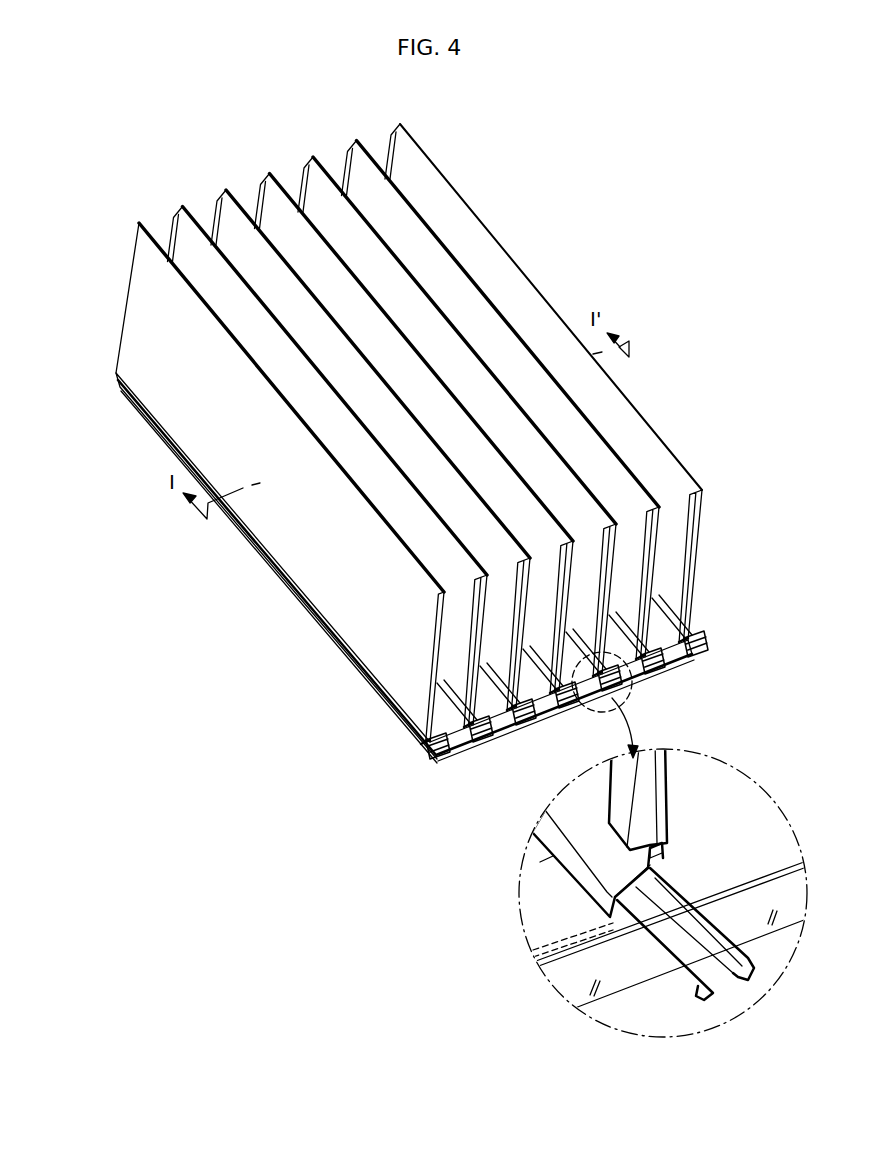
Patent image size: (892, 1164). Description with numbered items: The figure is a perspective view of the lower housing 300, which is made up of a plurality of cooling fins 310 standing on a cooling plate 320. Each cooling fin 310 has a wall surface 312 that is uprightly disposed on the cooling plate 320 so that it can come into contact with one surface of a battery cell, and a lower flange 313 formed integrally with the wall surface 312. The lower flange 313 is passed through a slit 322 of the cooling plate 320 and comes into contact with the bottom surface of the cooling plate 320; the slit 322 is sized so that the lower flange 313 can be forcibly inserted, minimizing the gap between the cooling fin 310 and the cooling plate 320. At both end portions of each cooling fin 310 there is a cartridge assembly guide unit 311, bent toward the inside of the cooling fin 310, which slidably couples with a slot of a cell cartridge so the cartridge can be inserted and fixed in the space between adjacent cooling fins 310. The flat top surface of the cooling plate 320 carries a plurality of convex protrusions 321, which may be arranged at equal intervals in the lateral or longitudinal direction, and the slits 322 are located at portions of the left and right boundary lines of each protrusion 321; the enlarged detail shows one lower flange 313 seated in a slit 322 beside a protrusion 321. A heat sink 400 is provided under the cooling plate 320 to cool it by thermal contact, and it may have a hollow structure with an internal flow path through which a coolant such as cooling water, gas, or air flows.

The lower housing 300 is at (179, 124).
The cooling fin 310 is at (115, 299).
The cartridge assembly guide unit 311 is at (665, 543).
The wall surface 312 is at (193, 242).
The lower flange 313 is at (440, 720).
The cooling plate 320 is at (360, 678).
The protrusion 321 is at (530, 700).
The slit 322 is at (617, 695).
The heat sink 400 is at (274, 601).